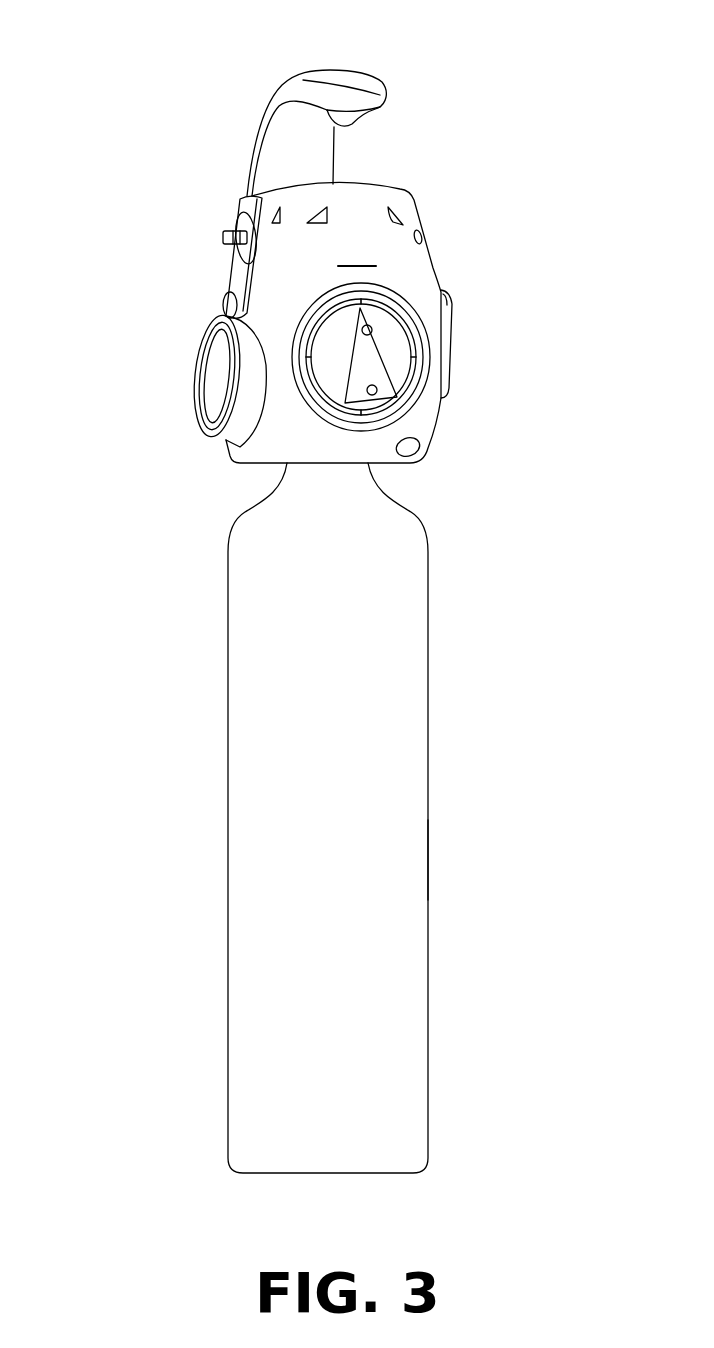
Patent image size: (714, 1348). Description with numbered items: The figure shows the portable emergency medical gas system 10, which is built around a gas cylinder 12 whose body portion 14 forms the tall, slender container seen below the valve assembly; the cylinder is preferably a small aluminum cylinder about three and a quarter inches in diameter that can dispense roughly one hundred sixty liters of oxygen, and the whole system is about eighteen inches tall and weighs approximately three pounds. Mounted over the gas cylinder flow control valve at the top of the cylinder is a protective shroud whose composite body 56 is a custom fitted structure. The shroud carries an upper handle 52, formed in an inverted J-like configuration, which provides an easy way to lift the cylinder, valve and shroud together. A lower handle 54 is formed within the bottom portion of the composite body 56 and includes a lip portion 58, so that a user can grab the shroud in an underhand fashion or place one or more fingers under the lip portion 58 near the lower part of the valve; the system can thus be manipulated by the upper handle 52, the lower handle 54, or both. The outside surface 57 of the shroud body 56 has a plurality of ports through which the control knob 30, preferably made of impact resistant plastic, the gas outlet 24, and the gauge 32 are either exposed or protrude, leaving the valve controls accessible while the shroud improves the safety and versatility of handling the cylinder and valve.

The emergency medical gas system 10 is at (196, 82).
The gas cylinder 12 is at (192, 878).
The body portion 14 is at (423, 863).
The gas outlet 24 is at (230, 232).
The control knob 30 is at (395, 353).
The gauge 32 is at (218, 397).
The upper handle 52 is at (367, 78).
The lower handle 54 is at (241, 476).
The composite body 56 is at (227, 306).
The outside surface 57 is at (357, 251).
The lip portion 58 is at (415, 448).